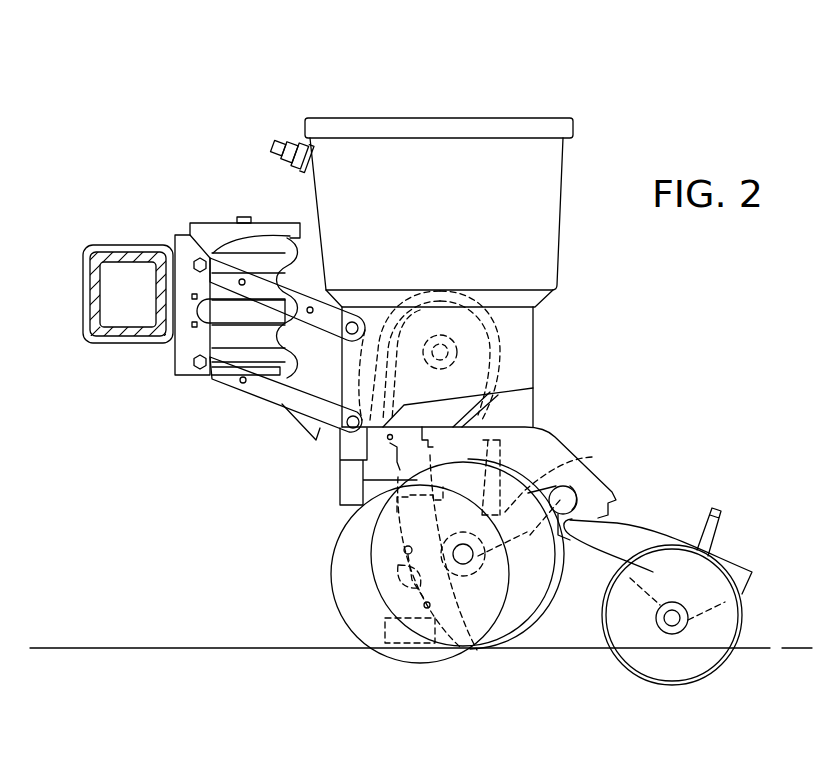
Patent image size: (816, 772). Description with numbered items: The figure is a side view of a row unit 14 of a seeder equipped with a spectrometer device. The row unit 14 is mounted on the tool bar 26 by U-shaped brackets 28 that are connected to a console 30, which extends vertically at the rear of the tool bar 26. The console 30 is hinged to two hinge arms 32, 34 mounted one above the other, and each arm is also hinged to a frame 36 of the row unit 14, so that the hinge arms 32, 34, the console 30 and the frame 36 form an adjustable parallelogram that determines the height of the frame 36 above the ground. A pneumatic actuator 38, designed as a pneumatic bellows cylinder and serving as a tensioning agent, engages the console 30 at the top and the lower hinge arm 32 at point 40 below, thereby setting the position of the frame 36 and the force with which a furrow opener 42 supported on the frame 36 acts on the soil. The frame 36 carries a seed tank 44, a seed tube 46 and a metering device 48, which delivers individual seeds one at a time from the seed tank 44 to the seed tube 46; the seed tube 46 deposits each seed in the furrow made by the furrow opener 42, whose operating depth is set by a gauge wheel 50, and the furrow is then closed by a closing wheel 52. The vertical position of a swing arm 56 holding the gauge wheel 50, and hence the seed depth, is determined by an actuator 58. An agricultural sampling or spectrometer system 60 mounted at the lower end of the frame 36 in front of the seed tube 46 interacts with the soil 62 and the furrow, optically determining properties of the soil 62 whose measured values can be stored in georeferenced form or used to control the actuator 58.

The row unit 14 is at (672, 70).
The tool bar 26 is at (116, 308).
The U-shaped brackets 28 is at (108, 342).
The console 30 is at (185, 248).
The lower hinge arm 32 is at (272, 392).
The upper hinge arm 34 is at (283, 300).
The frame 36 is at (520, 367).
The pneumatic actuator 38 is at (222, 312).
The point 40 is at (242, 383).
The furrow opener 42 is at (407, 652).
The seed tank 44 is at (463, 202).
The seed tube 46 is at (445, 623).
The metering device 48 is at (413, 300).
The gauge wheel 50 is at (631, 615).
The closing wheel 52 is at (688, 667).
The swing arm 56 is at (555, 567).
The actuator 58 is at (592, 457).
The spectrometer system 60 is at (390, 628).
The soil 62 is at (143, 648).